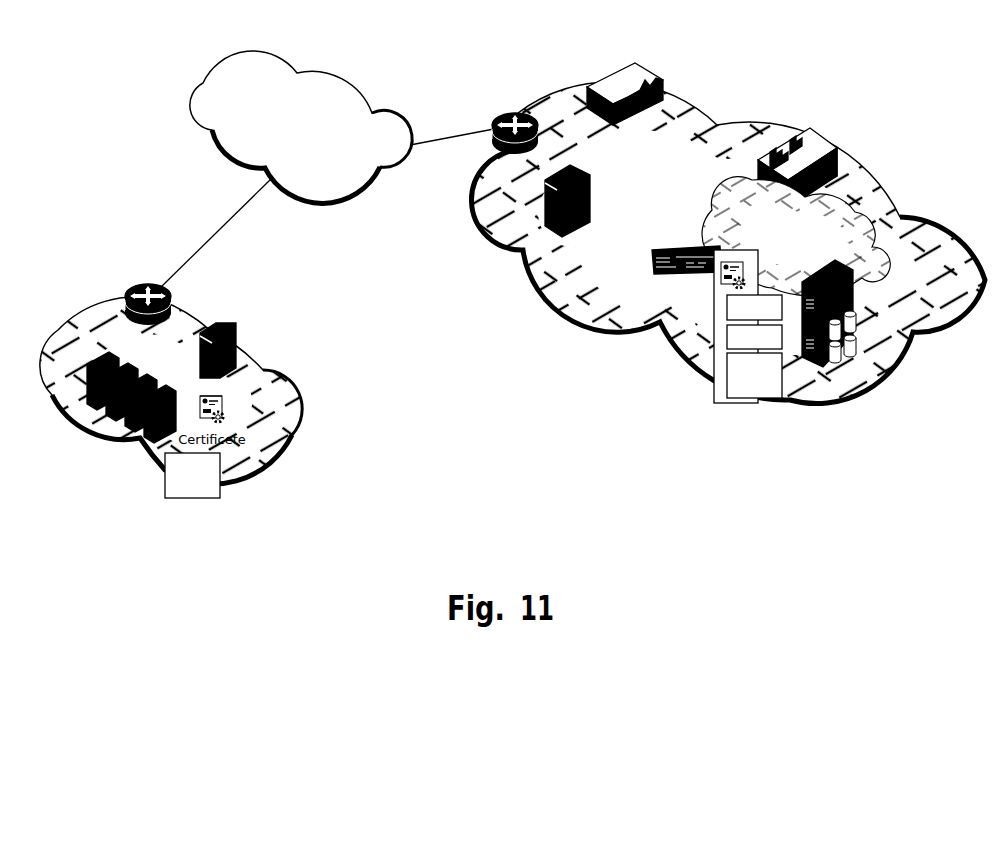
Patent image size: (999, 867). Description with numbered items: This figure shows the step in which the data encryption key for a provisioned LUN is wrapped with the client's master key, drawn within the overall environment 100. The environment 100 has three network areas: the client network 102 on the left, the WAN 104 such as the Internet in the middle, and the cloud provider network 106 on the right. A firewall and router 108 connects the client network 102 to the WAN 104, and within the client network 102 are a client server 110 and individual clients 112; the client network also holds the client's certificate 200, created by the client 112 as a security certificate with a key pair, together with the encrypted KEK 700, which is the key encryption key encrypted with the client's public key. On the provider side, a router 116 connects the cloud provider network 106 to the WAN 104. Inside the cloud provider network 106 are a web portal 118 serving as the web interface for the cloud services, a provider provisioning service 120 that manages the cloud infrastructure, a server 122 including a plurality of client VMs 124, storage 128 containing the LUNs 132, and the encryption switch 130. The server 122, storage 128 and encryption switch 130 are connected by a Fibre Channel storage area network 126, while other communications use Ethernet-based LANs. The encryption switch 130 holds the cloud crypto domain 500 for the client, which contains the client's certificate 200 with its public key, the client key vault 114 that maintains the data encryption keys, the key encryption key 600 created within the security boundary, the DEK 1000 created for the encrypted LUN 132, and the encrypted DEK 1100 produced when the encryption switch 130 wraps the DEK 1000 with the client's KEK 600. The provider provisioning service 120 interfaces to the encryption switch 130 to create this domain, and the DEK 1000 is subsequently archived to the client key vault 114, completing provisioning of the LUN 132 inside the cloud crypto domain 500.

The environment 100 is at (536, 484).
The client network 102 is at (247, 479).
The WAN network 104 is at (203, 83).
The cloud provider network 106 is at (840, 404).
The firewall and router 108 is at (133, 288).
The client server 110 is at (228, 382).
The individual clients 112 is at (125, 427).
The client key vault 114 is at (214, 322).
The router 116 is at (509, 112).
The web portal 118 is at (590, 84).
The provider provisioning service 120 is at (548, 190).
The server 122 is at (835, 160).
The client VMs 124 is at (802, 134).
The Fibre Channel storage area network 126 is at (704, 222).
The storage 128 is at (857, 312).
The encryption switch 130 is at (701, 276).
The LUNs 132 is at (847, 360).
The certificate 200 is at (228, 412).
The cloud crypto domain 500 is at (724, 261).
The key encryption key 600 is at (727, 307).
The encrypted KEK 700 is at (164, 478).
The DEK 1000 is at (727, 336).
The encrypted DEK 1100 is at (727, 372).